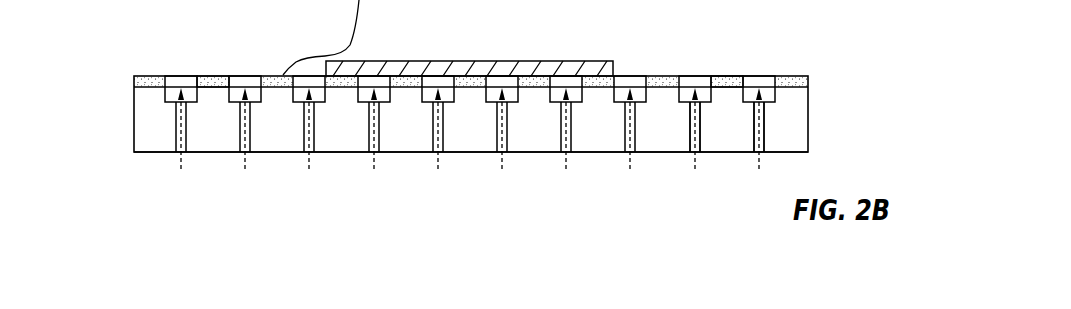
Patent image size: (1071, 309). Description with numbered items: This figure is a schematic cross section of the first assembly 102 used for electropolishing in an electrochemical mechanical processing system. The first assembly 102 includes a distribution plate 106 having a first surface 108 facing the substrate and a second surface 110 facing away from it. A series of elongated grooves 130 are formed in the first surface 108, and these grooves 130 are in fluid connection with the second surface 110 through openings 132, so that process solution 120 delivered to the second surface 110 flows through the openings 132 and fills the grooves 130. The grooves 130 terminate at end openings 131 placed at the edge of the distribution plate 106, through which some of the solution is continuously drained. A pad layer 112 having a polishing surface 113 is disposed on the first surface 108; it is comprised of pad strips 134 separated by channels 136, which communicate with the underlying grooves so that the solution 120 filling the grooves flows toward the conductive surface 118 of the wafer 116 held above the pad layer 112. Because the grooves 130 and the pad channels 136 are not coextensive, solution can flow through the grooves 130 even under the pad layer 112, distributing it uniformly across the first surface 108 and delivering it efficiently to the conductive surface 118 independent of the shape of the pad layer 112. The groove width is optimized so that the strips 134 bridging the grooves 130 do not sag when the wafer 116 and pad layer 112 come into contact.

The first assembly 102 is at (841, 102).
The distribution plate 106 is at (133, 115).
The first surface 108 is at (150, 86).
The second surface 110 is at (150, 152).
The pad layer 112 is at (134, 76).
The polishing surface 113 is at (213, 76).
The wafer 116 is at (614, 65).
The conductive surface 118 is at (468, 88).
The process solution 120 is at (247, 158).
The grooves 130 is at (232, 91).
The end openings 131 is at (250, 9).
The openings 132 is at (700, 125).
The pad strips 134 is at (728, 75).
The channels 136 is at (710, 82).